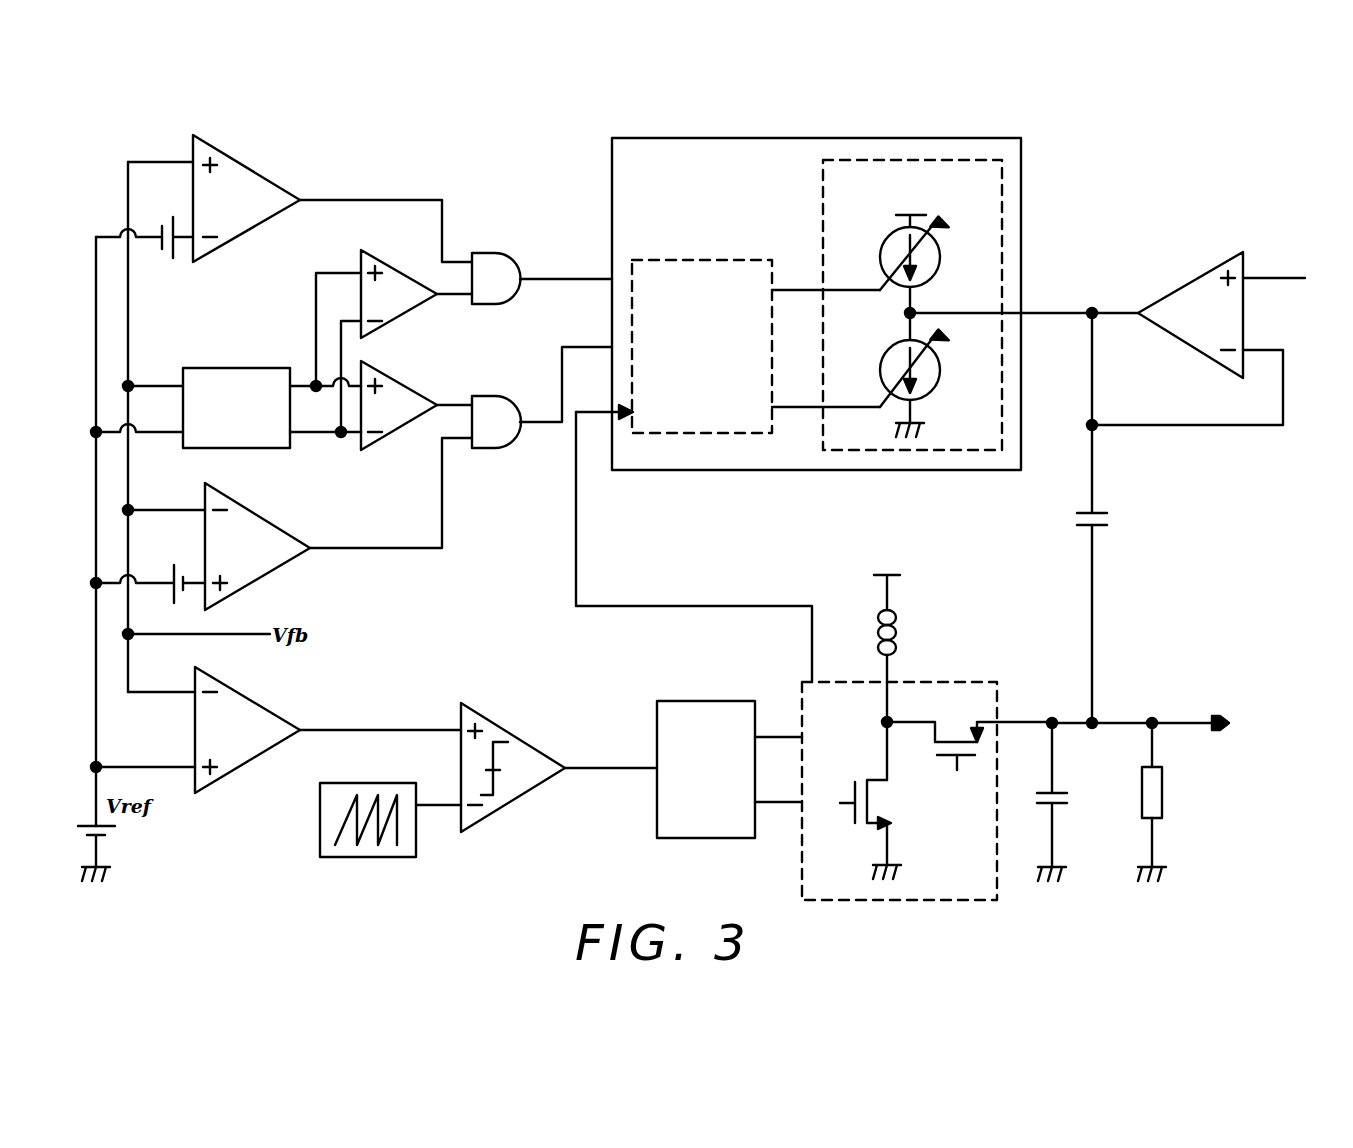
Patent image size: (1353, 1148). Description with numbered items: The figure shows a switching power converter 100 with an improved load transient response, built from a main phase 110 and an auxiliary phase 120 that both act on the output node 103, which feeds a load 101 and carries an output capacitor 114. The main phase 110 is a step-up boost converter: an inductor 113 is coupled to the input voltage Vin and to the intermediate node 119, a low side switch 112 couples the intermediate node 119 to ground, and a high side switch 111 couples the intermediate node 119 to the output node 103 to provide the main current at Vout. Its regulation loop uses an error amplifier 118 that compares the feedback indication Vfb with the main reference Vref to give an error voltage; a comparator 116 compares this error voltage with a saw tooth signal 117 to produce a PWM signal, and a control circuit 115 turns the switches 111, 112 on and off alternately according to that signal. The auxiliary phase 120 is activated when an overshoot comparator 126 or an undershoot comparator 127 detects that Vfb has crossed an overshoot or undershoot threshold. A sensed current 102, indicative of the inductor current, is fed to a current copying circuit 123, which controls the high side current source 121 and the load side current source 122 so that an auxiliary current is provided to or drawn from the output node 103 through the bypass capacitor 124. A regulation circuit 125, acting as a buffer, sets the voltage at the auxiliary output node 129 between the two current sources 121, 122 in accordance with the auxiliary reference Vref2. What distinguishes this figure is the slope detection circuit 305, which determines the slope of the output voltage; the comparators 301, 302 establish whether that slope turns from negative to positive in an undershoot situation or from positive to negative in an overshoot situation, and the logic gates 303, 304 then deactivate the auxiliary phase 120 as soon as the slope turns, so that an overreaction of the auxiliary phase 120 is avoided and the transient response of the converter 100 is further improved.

The switching power converter 100 is at (236, 78).
The load 101 is at (1162, 795).
The sensed current 102 is at (575, 564).
The output node 103 is at (1098, 716).
The main phase 110 is at (937, 612).
The high side switch 111 is at (956, 732).
The low side switch 112 is at (876, 802).
The inductor 113 is at (874, 648).
The output capacitor 114 is at (1056, 808).
The control circuit 115 is at (656, 724).
The comparator 116 is at (506, 722).
The saw tooth signal 117 is at (386, 858).
The error amplifier 118 is at (250, 696).
The intermediate node 119 is at (885, 722).
The auxiliary phase 120 is at (673, 138).
The high side current source 121 is at (878, 257).
The load side current source 122 is at (937, 367).
The current copying circuit 123 is at (692, 260).
The bypass capacitor 124 is at (1108, 511).
The regulation circuit 125 is at (1194, 352).
The overshoot comparator 126 is at (241, 240).
The undershoot comparator 127 is at (253, 582).
The auxiliary output node 129 is at (905, 313).
The comparator 301 is at (408, 267).
The comparator 302 is at (394, 436).
The logic gate 303 is at (490, 253).
The logic gate 304 is at (490, 396).
The slope detection circuit 305 is at (244, 368).